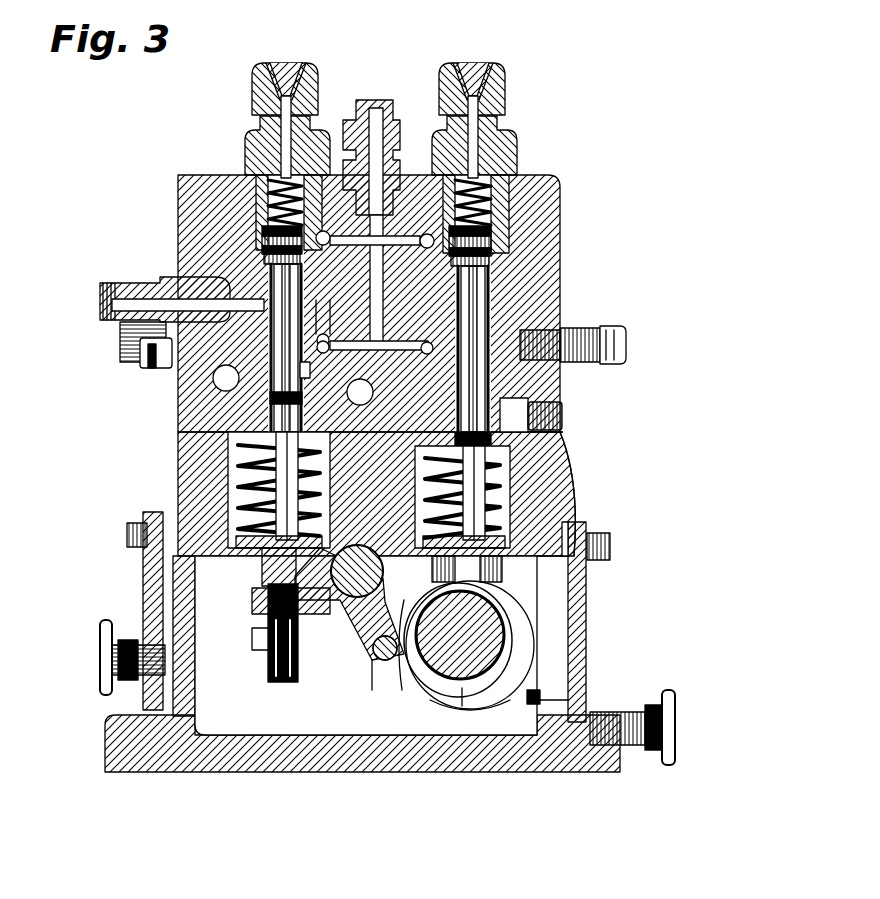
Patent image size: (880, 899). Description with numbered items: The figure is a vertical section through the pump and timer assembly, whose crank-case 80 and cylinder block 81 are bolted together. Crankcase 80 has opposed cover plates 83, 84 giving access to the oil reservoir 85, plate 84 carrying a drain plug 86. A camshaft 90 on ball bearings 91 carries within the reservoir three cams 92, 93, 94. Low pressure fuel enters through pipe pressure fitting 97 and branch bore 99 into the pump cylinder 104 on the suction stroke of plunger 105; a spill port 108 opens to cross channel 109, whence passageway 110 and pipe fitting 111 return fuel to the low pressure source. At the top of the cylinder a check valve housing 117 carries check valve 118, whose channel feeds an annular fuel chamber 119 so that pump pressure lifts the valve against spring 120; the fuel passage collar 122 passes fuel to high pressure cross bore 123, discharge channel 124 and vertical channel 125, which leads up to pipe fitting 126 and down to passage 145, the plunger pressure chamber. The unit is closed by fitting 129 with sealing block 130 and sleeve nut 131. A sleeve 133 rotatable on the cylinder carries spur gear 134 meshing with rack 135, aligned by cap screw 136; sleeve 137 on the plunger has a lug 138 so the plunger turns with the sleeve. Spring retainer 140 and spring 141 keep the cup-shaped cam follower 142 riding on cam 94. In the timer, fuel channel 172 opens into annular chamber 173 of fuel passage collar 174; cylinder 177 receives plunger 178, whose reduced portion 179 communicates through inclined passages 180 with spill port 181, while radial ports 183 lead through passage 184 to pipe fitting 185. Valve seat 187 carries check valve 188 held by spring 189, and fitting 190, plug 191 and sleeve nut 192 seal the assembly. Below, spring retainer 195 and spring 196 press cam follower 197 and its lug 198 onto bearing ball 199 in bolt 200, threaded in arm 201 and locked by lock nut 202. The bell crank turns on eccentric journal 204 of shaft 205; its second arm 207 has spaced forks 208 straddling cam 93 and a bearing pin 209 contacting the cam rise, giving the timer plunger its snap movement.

The crank-case 80 is at (548, 487).
The cylinder block 81 is at (556, 300).
The cover plate 83 is at (580, 586).
The cover plate 84 is at (152, 578).
The oil reservoir 85 is at (258, 718).
The drain plug 86 is at (100, 693).
The camshaft 90 is at (470, 710).
The ball bearings 91 is at (532, 672).
The cam 92 is at (520, 642).
The cam 93 is at (520, 602).
The cam 94 is at (462, 705).
The pipe pressure fitting 97 is at (624, 346).
The branch bore 99 is at (522, 334).
The pump cylinder 104 is at (472, 376).
The plunger 105 is at (492, 372).
The spill port 108 is at (432, 298).
The cross channel 109 is at (428, 344).
The passageway 110 is at (205, 360).
The pipe fitting 111 is at (150, 342).
The check valve housing 117 is at (502, 272).
The check valve 118 is at (500, 243).
The annular fuel chamber 119 is at (506, 262).
The spring 120 is at (482, 198).
The fuel passage collar 122 is at (506, 222).
The high pressure cross bore 123 is at (426, 236).
The high pressure discharge channel 124 is at (404, 238).
The vertical channel 125 is at (383, 278).
The pipe fitting 126 is at (366, 100).
The fitting 129 is at (510, 152).
The sealing block 130 is at (476, 64).
The sleeve nut 131 is at (500, 86).
The sleeve 133 is at (502, 442).
The spur gear 134 is at (542, 428).
The rack 135 is at (522, 400).
The cap screw 136 is at (560, 417).
The sleeve 137 is at (506, 516).
The lug 138 is at (520, 466).
The spring retainer 140 is at (568, 532).
The spring 141 is at (502, 500).
The cam follower 142 is at (522, 566).
The passage 145 is at (362, 396).
The fuel channel 172 is at (324, 230).
The annular chamber 173 is at (256, 232).
The fuel passage collar 174 is at (260, 226).
The cylinder 177 is at (268, 405).
The plunger 178 is at (268, 398).
The portion of smaller exterior diameter 179 is at (215, 380).
The inclined passages 180 is at (302, 372).
The spill port 181 is at (323, 335).
The radial ports 183 is at (326, 292).
The passage 184 is at (228, 305).
The pipe fitting 185 is at (100, 298).
The valve seat 187 is at (256, 246).
The check valve 188 is at (262, 214).
The spring 189 is at (266, 192).
The fitting 190 is at (250, 140).
The plug 191 is at (284, 64).
The sleeve nut 192 is at (262, 64).
The spring retainer 195 is at (210, 488).
The spring 196 is at (228, 470).
The cam follower 197 is at (230, 512).
The lug 198 is at (268, 560).
The bearing ball 199 is at (268, 588).
The bolt 200 is at (280, 670).
The arm 201 is at (258, 615).
The lock nut 202 is at (258, 640).
The eccentric journal 204 is at (360, 605).
The shaft 205 is at (338, 600).
The second arm 207 is at (362, 690).
The spaced forks 208 is at (402, 690).
The bearing pin 209 is at (372, 690).